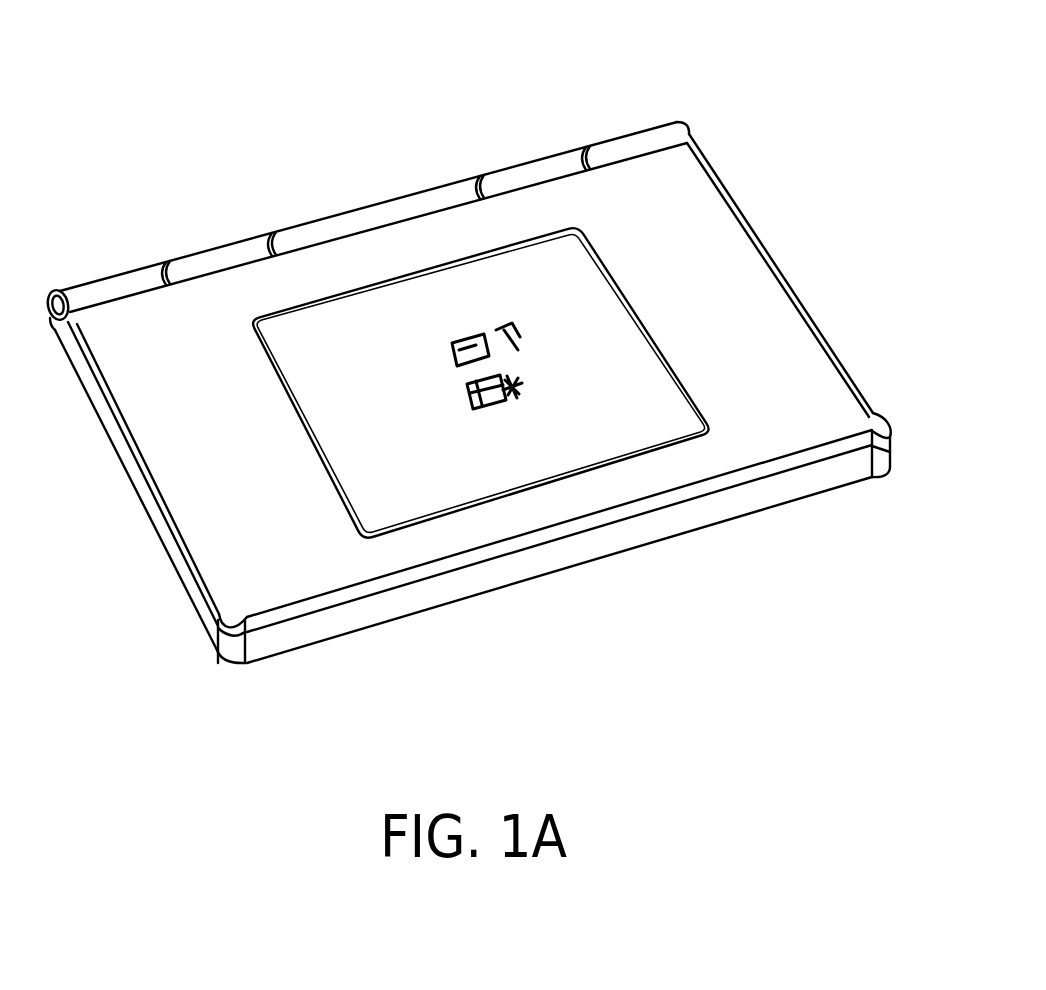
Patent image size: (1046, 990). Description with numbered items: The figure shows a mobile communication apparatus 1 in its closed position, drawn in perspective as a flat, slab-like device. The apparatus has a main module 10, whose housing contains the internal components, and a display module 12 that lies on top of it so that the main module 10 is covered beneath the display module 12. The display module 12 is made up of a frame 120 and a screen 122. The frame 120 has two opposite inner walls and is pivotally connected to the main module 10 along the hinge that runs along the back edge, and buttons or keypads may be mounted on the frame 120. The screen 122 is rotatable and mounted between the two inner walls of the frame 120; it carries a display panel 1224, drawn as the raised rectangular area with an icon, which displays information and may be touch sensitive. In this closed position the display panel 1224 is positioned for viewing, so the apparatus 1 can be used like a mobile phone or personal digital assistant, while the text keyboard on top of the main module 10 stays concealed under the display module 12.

The mobile communication apparatus 1 is at (258, 118).
The main module 10 is at (811, 478).
The display module 12 is at (860, 143).
The frame 120 is at (697, 192).
The screen 122 is at (586, 260).
The display panel 1224 is at (434, 494).